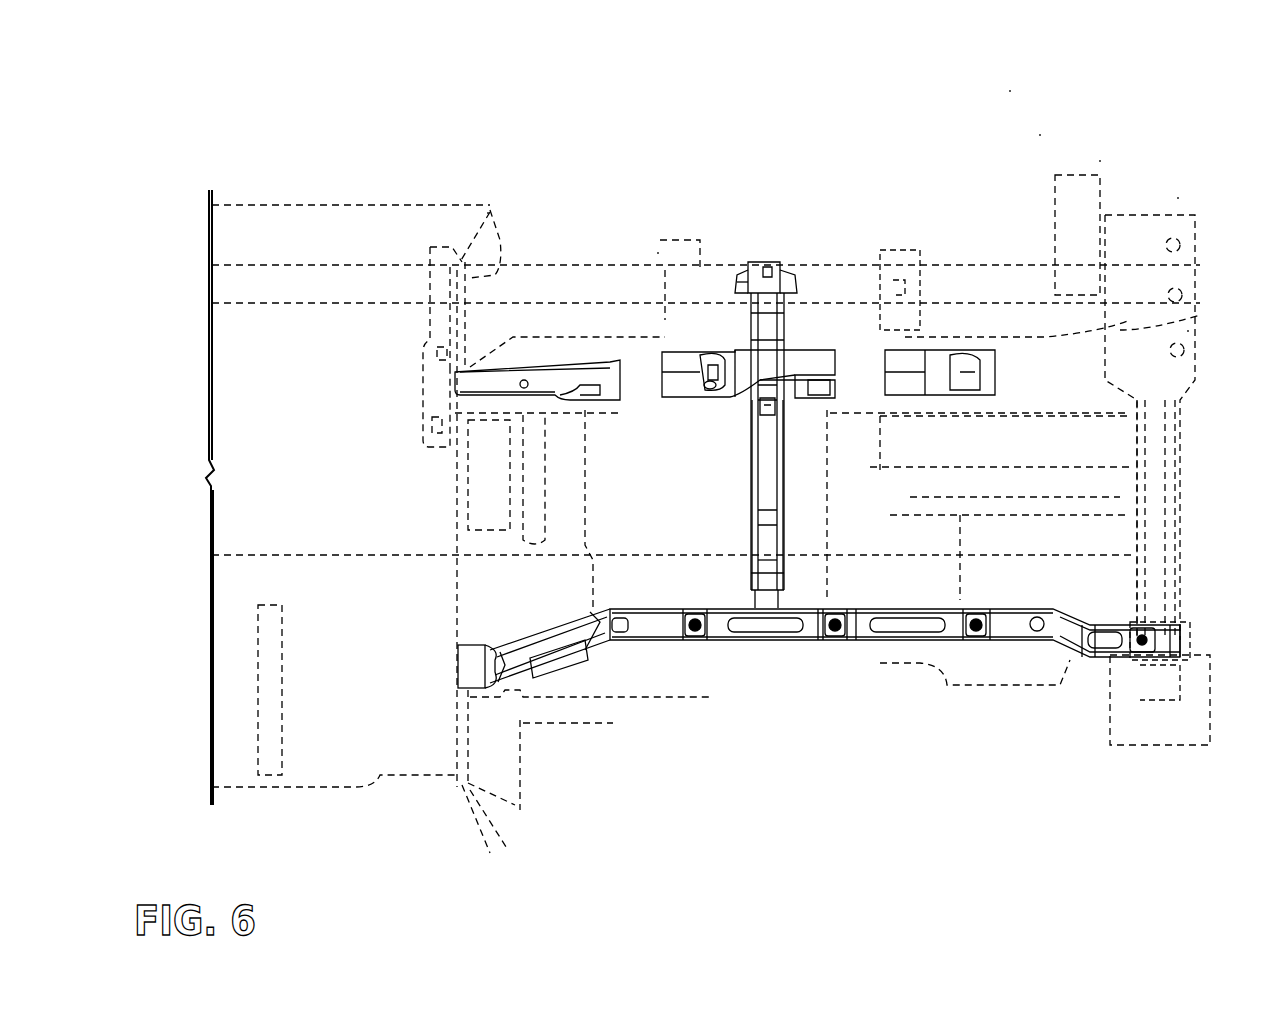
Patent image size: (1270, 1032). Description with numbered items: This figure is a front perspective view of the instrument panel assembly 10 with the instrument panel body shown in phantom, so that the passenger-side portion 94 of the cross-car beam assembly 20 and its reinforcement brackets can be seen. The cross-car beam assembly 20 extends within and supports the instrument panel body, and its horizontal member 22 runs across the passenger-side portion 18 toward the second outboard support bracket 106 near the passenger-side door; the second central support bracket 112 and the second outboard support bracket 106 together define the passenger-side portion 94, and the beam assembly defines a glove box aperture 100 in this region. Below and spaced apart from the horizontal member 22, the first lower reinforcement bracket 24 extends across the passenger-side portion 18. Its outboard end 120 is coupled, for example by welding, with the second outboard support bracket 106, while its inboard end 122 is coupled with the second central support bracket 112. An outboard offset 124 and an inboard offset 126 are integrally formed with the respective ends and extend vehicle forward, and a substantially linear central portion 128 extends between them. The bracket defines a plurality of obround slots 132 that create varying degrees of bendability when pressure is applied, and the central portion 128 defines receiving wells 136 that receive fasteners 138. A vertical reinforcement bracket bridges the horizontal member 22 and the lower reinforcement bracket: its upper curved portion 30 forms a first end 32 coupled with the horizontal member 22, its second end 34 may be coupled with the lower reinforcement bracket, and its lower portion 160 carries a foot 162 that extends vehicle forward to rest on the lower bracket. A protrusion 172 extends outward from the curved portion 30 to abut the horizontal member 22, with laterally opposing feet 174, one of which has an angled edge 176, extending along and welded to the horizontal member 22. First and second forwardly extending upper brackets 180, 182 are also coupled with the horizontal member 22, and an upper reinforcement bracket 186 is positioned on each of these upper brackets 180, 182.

The instrument panel assembly 10 is at (1100, 155).
The passenger-side portion 18 is at (1010, 82).
The cross-car beam assembly 20 is at (1180, 195).
The horizontal member 22 is at (532, 262).
The first lower reinforcement bracket 24 is at (902, 643).
The curved portion 30 is at (770, 316).
The first end 32 is at (768, 270).
The second end 34 is at (763, 567).
The passenger-side portion 94 is at (1040, 130).
The glove box aperture 100 is at (630, 572).
The second outboard support bracket 106 is at (1190, 330).
The second central support bracket 112 is at (490, 210).
The outboard end 120 is at (1165, 635).
The inboard end 122 is at (470, 663).
The outboard offset 124 is at (1066, 643).
The inboard offset 126 is at (570, 680).
The central portion 128 is at (950, 623).
The slots 132 is at (518, 672).
The receiving wells 136 is at (680, 628).
The fasteners 138 is at (693, 641).
The lower portion 160 is at (723, 641).
The foot 162 is at (769, 606).
The protrusion 172 is at (766, 270).
The feet 174 is at (738, 288).
The angled edge 176 is at (740, 294).
The first forwardly extending upper bracket 180 is at (660, 250).
The second forwardly extending upper bracket 182 is at (905, 250).
The upper reinforcement brackets 186 is at (510, 382).